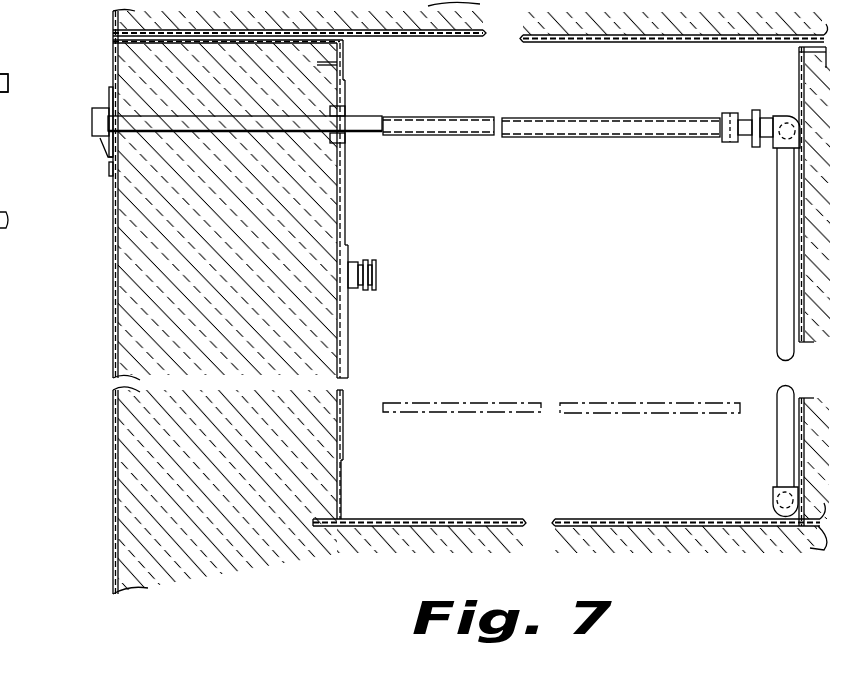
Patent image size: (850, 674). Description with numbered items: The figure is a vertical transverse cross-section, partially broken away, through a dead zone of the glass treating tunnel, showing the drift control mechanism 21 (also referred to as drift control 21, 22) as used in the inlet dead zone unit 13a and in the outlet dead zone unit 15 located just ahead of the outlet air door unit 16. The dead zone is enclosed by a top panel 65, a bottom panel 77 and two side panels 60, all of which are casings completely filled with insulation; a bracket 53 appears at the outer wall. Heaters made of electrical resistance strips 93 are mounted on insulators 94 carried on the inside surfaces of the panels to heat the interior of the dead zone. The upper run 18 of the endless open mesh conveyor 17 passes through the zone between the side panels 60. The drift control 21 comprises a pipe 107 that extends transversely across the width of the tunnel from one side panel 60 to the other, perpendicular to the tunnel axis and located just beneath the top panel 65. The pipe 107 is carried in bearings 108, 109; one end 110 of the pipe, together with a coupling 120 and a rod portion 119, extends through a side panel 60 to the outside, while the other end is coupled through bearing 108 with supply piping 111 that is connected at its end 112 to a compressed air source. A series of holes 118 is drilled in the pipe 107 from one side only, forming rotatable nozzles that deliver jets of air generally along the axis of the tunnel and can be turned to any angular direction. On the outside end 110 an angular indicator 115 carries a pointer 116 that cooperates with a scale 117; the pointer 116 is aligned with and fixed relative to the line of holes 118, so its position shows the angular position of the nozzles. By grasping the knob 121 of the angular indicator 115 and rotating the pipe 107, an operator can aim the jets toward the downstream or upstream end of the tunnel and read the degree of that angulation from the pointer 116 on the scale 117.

The outlet dead zone unit 15 is at (42, 55).
The outlet air door unit 16 is at (30, 67).
The bracket 53 is at (10, 170).
The end of the pipe 110 is at (135, 120).
The knob 121 is at (108, 104).
The angular indicator 115 is at (86, 129).
The pointer 116 is at (104, 143).
The scale 117 is at (110, 170).
The bearing 109 is at (346, 108).
The rod 119 is at (356, 133).
The holes 118 is at (562, 138).
The pipe 107 is at (549, 117).
The coupling 120 is at (718, 124).
The bearing 108 is at (726, 144).
The top panel 65 is at (615, 46).
The drift control mechanism 21 is at (406, 152).
The cavity 22 is at (406, 152).
The electrical resistance strips 93 is at (377, 275).
The insulators 94 is at (352, 288).
The supply piping 111 is at (782, 280).
The end 112 is at (770, 508).
The side panels 60 is at (110, 418).
The open mesh conveyor 17 is at (447, 418).
The upper run 18 is at (594, 407).
The bottom panel 77 is at (636, 542).
The dead zone unit 13a is at (205, 588).